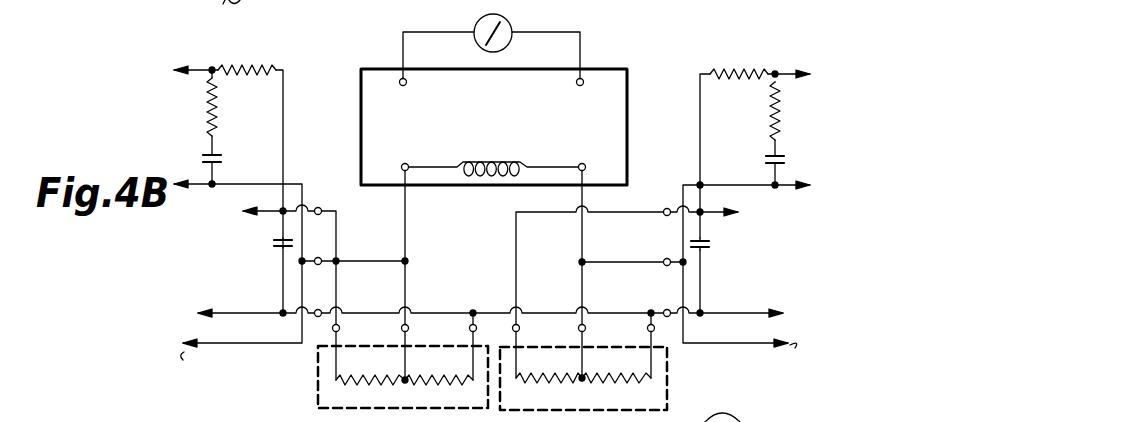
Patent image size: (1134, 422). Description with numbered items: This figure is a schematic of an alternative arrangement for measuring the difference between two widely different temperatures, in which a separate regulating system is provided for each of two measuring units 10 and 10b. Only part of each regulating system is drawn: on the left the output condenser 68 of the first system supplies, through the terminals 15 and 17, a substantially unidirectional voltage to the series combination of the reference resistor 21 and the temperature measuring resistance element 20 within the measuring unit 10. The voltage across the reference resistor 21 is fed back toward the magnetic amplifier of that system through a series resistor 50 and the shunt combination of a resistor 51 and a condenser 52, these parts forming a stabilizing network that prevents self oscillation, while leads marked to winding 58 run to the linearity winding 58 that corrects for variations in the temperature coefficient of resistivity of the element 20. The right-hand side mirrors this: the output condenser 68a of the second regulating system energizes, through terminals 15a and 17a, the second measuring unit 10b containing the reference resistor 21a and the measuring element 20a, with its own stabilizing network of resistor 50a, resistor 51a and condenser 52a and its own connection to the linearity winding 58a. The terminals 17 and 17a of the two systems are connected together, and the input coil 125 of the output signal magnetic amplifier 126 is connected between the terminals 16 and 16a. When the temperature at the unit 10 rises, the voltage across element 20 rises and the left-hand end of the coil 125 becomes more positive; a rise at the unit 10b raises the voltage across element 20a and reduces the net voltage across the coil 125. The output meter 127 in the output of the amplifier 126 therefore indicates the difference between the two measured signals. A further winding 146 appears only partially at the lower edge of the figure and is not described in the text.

The measuring unit 10 is at (314, 387).
The second measuring unit 10b is at (668, 391).
The terminal 15 is at (318, 207).
The terminal 15a is at (667, 209).
The terminal 16 is at (321, 245).
The terminal 16a is at (667, 259).
The terminal 17 is at (321, 297).
The terminal 17a is at (667, 310).
The temperature measuring resistance element 20 is at (437, 383).
The measuring element 20a is at (621, 383).
The reference resistor 21 is at (372, 383).
The reference resistor 21a is at (551, 383).
The series resistor 50 is at (238, 77).
The series resistor 50a is at (755, 78).
The resistor 51 is at (216, 112).
The resistor 51a is at (773, 114).
The condenser 52 is at (221, 153).
The condenser 52a is at (765, 156).
The linearity winding 58 is at (240, 358).
The linearity winding 58a is at (753, 354).
The output condenser 68 is at (275, 249).
The output condenser 68a is at (714, 245).
The input coil 125 is at (497, 178).
The output amplifier 126 is at (597, 69).
The output meter 127 is at (511, 17).
The winding (partially shown) 146 is at (745, 418).